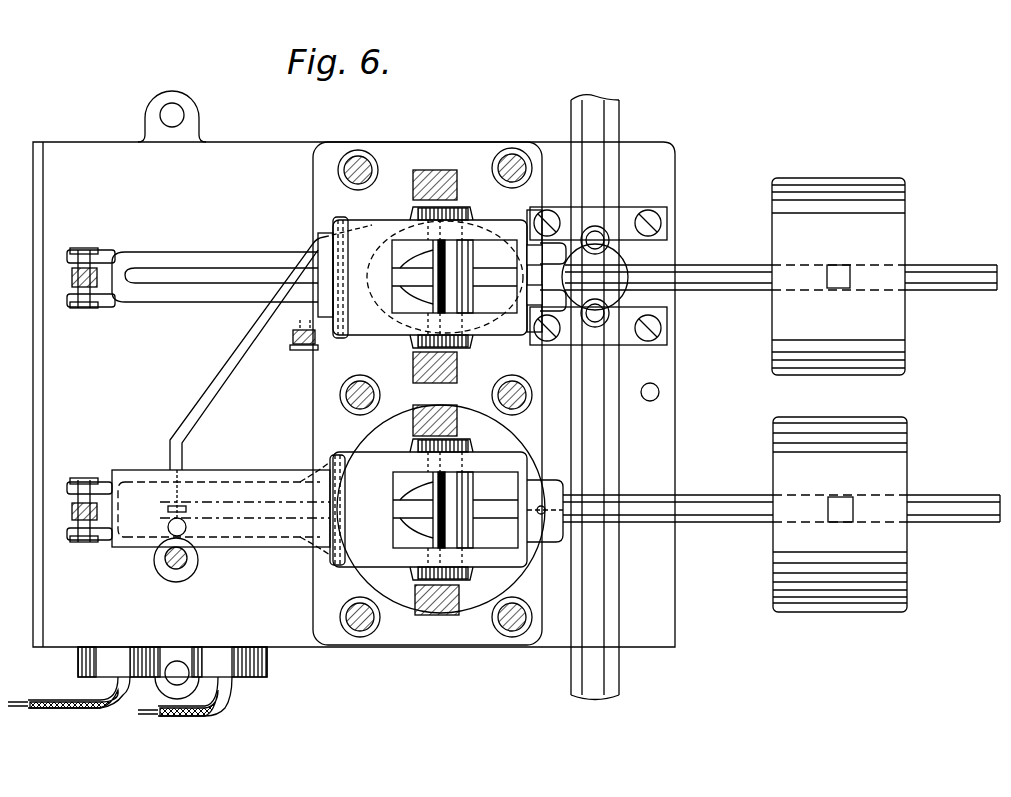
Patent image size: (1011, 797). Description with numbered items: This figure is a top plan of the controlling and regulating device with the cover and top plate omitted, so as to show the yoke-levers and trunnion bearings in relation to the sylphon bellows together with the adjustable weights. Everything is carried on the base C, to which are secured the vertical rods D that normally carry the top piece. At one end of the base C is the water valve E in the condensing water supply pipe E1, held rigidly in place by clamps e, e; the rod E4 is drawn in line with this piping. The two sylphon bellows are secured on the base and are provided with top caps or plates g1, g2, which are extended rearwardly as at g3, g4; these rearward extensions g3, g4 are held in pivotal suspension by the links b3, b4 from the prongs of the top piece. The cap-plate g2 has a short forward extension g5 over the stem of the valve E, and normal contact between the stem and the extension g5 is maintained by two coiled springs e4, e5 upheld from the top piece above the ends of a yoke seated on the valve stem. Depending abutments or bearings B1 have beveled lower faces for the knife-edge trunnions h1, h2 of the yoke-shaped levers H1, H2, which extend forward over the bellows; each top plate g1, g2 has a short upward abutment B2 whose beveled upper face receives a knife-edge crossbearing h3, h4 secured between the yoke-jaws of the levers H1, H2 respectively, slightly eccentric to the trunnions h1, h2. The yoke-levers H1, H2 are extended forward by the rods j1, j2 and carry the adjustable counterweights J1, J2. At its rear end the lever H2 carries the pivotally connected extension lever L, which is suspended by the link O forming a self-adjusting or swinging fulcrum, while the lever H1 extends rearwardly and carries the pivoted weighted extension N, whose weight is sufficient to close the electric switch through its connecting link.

The base C is at (354, 369).
The vertical rods D is at (358, 160).
The depending abutments or bearings B1 is at (455, 182).
The abutment B2 is at (466, 282).
The yoke-shaped lever H1 is at (498, 476).
The yoke-shaped lever H2 is at (497, 332).
The knife-edge trunnion h1 is at (430, 572).
The knife-edge trunnion h2 is at (448, 342).
The knife-edge crossbearing h3 is at (462, 545).
The knife-edge crossbearing h4 is at (441, 272).
The top cap or plate g1 is at (402, 640).
The top cap or plate g2 is at (405, 335).
The rearward extension g3 is at (98, 540).
The rearward extension g4 is at (113, 300).
The short forward extension g5 is at (530, 322).
The link b3 is at (74, 505).
The link b4 is at (74, 278).
The extension lever L is at (242, 347).
The link O is at (297, 344).
The weighted extension N is at (238, 547).
The water valve E is at (660, 328).
The condensing water supply pipe E1 is at (595, 397).
The rod E4 is at (590, 588).
The clamps e is at (597, 275).
The coiled spring e4 is at (652, 402).
The coiled spring e5 is at (603, 228).
The rod j1 is at (712, 524).
The rod j2 is at (712, 265).
The adjustable counterweight J1 is at (840, 514).
The adjustable counterweight J2 is at (838, 276).